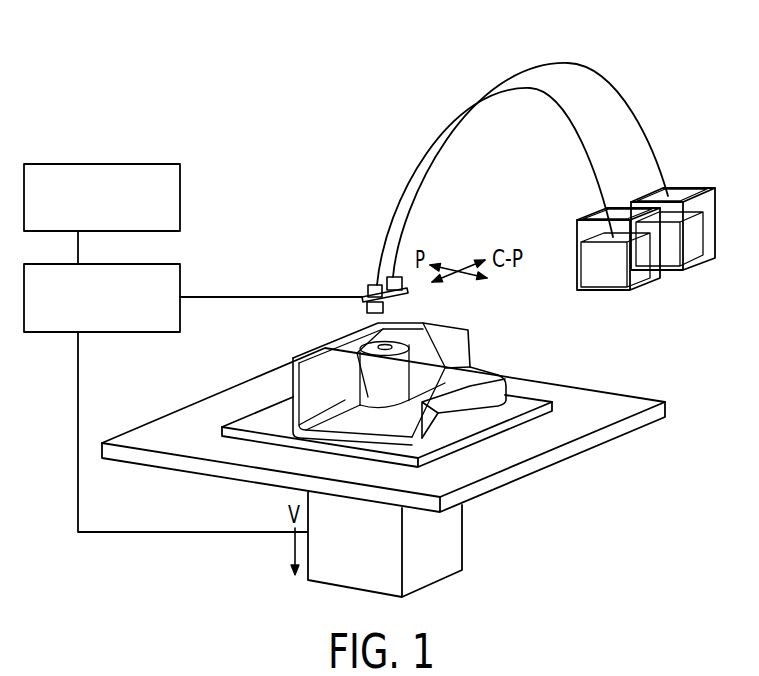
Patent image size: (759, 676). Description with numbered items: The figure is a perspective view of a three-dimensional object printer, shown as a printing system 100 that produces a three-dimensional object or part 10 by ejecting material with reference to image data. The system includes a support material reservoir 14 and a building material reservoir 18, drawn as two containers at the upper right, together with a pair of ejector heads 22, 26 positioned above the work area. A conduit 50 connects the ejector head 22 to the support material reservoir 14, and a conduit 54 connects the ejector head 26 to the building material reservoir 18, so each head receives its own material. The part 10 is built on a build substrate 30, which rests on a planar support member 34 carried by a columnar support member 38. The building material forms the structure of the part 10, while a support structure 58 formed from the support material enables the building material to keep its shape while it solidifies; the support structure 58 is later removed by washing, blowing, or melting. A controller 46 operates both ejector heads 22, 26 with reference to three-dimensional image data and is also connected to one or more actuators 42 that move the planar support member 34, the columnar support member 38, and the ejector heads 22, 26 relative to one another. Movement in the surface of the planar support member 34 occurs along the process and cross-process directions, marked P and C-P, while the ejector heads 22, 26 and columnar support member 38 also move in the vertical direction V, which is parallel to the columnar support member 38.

The printing system 100 is at (318, 135).
The controller 46 is at (181, 197).
The actuator 42 is at (181, 277).
The conduit 54 is at (625, 105).
The conduit 50 is at (590, 158).
The support material reservoir 14 is at (643, 263).
The building material reservoir 18 is at (693, 257).
The ejector head 26 is at (413, 303).
The ejector head 22 is at (352, 310).
The support structure 58 is at (460, 362).
The three-dimensional object or part 10 is at (462, 390).
The build substrate 30 is at (475, 433).
The planar support member 34 is at (522, 485).
The columnar support member 38 is at (455, 558).